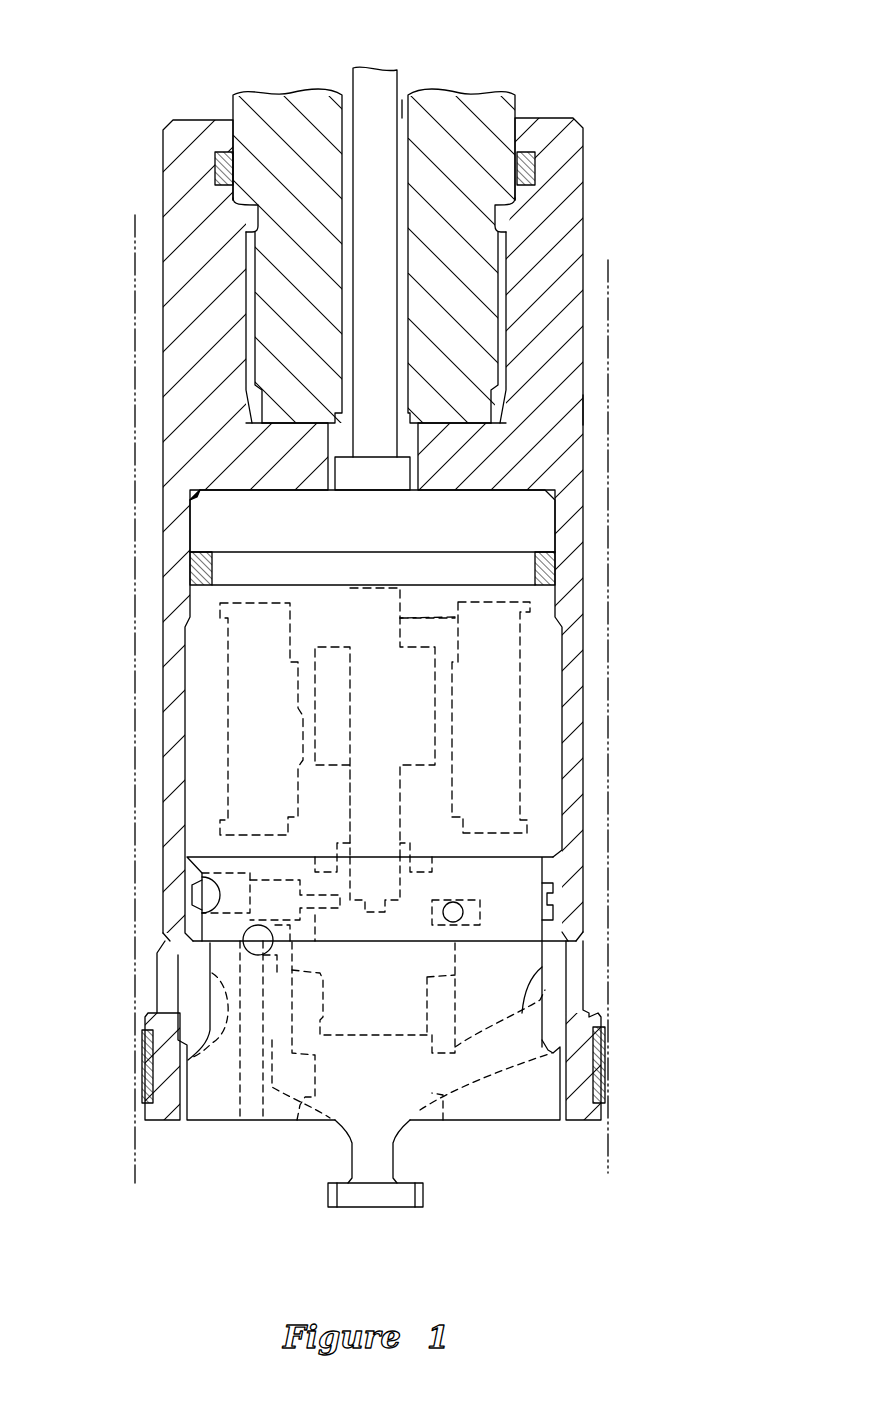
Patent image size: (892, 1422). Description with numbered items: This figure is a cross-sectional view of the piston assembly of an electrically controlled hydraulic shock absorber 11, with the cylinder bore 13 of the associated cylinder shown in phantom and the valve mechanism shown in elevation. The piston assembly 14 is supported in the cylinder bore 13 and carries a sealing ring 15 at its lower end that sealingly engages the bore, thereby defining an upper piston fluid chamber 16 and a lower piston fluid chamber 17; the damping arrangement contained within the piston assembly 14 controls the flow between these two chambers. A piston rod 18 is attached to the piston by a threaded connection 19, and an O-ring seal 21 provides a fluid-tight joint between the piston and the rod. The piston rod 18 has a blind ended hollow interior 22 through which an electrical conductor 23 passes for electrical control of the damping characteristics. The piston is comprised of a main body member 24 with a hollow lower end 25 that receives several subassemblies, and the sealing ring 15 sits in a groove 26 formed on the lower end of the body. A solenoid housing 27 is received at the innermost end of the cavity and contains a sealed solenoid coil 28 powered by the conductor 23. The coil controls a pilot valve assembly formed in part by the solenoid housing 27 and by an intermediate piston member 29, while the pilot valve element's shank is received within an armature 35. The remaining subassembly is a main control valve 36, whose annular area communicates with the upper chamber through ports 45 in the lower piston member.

The electrically controlled shock absorber 11 is at (704, 189).
The cylinder bore 13 is at (608, 326).
The piston assembly 14 is at (586, 171).
The sealing ring 15 is at (605, 1063).
The upper piston fluid chamber 16 is at (583, 410).
The lower piston fluid chamber 17 is at (542, 1198).
The piston rod 18 is at (515, 107).
The threaded connection 19 is at (503, 268).
The O-ring seal 21 is at (217, 162).
The blind ended hollow interior 22 is at (401, 115).
The electrical conductor 23 is at (373, 83).
The main body member 24 is at (155, 437).
The hollow lower end 25 is at (195, 690).
The groove 26 is at (605, 1090).
The solenoid housing 27 is at (545, 653).
The solenoid coil 28 is at (522, 717).
The intermediate piston member 29 is at (543, 872).
The armature 35 is at (455, 617).
The main control valve 36 is at (336, 1212).
The ports 45 is at (523, 1032).